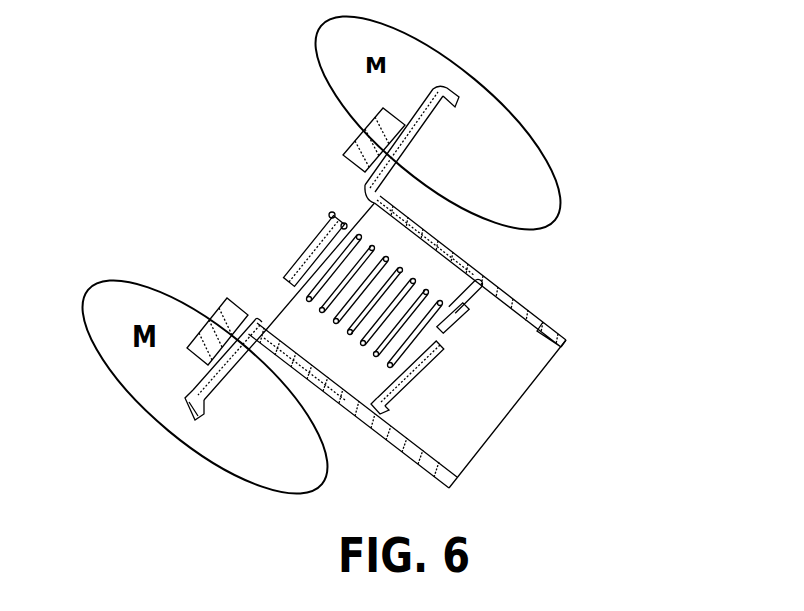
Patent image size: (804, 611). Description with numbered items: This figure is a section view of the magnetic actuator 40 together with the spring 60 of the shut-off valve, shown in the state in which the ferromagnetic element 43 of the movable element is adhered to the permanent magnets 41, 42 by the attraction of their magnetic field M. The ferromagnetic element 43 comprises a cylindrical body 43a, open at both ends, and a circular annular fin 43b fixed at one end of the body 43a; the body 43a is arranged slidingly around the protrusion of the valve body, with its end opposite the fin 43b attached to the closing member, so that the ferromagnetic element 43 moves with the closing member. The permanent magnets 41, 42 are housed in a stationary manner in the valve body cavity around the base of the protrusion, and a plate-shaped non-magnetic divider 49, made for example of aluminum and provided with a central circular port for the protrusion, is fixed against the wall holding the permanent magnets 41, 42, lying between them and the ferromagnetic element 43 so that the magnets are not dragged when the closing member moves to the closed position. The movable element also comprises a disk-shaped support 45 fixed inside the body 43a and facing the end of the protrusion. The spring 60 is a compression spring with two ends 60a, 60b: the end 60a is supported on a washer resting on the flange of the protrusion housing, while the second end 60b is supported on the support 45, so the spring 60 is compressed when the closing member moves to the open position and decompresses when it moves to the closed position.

The magnetic actuator 40 is at (167, 130).
The permanent magnet 41 is at (196, 337).
The permanent magnet 42 is at (352, 134).
The ferromagnetic element 43 is at (444, 342).
The cylindrical body 43a is at (548, 319).
The circular annular fin 43b is at (250, 318).
The support 45 is at (375, 398).
The non-magnetic divider 49 is at (188, 393).
The spring 60 is at (471, 275).
The end of the spring 60a is at (313, 233).
The second end of the spring 60b is at (478, 297).